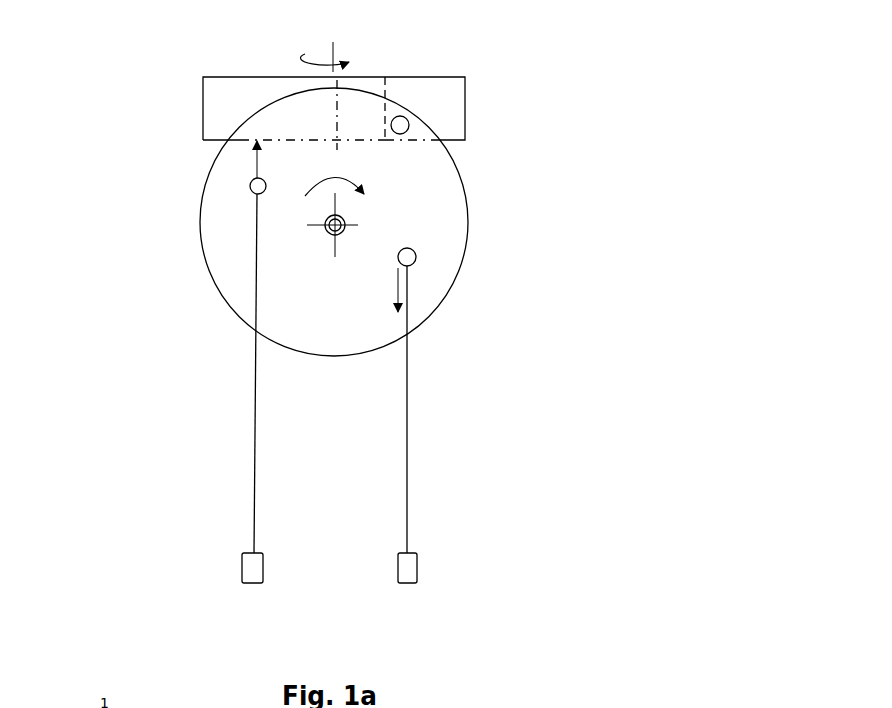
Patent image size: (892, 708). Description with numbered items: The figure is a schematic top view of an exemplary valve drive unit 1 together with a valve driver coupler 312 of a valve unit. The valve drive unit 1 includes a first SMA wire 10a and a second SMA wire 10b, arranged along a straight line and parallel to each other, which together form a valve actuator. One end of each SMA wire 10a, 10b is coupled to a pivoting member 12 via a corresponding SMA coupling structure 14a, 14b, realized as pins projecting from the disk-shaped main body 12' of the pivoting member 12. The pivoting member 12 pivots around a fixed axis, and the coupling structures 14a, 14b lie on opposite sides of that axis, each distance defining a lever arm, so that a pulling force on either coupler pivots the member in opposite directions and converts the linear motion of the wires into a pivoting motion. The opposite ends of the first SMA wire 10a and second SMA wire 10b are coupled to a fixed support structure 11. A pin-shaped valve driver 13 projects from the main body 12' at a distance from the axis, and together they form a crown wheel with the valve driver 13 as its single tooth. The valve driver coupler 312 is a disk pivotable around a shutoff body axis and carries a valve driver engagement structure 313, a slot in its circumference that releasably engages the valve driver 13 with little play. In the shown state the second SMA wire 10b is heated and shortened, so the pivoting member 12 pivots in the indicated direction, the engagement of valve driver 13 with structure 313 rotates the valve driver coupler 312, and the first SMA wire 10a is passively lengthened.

The valve drive unit 1 is at (112, 232).
The valve driver coupler 312 is at (237, 108).
The valve driver engagement structure 313 is at (393, 98).
The valve driver 13 is at (404, 125).
The pivoting member 12 is at (405, 222).
The main body 12' is at (461, 221).
The first SMA coupling structure 14a is at (252, 183).
The second SMA coupling structure 14b is at (415, 261).
The first SMA wire 10a is at (252, 460).
The second SMA wire 10b is at (413, 463).
The fixed support structure 11 is at (257, 568).